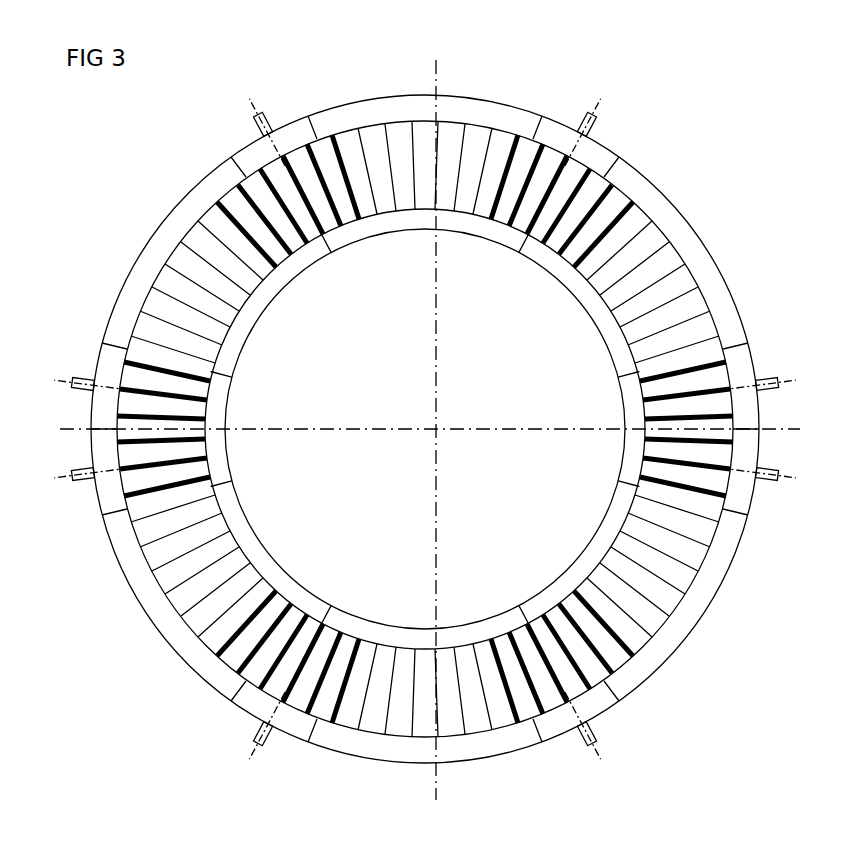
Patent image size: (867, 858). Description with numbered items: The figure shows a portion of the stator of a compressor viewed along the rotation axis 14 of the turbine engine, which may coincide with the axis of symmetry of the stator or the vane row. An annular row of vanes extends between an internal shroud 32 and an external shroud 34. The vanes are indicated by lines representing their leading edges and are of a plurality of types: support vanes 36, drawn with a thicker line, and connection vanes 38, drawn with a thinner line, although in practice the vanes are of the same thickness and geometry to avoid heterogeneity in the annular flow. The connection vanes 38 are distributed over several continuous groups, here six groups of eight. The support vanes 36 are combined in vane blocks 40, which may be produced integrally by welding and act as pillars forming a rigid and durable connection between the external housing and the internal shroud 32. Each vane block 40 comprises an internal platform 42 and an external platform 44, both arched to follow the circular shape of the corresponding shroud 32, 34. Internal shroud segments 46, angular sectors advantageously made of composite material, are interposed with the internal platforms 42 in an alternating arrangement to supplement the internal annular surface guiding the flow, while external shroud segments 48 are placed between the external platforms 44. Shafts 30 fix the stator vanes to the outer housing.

The rotation axis 14 is at (440, 432).
The shaft 30 is at (258, 118).
The internal shroud 32 is at (340, 548).
The external shroud 34 is at (688, 118).
The support vane 36 is at (532, 212).
The connection vane 38 is at (686, 296).
The vane block 40 is at (565, 108).
The internal platform 42 is at (315, 258).
The external platform 44 is at (300, 135).
The internal shroud segment 46 is at (388, 236).
The external shroud segment 48 is at (178, 236).